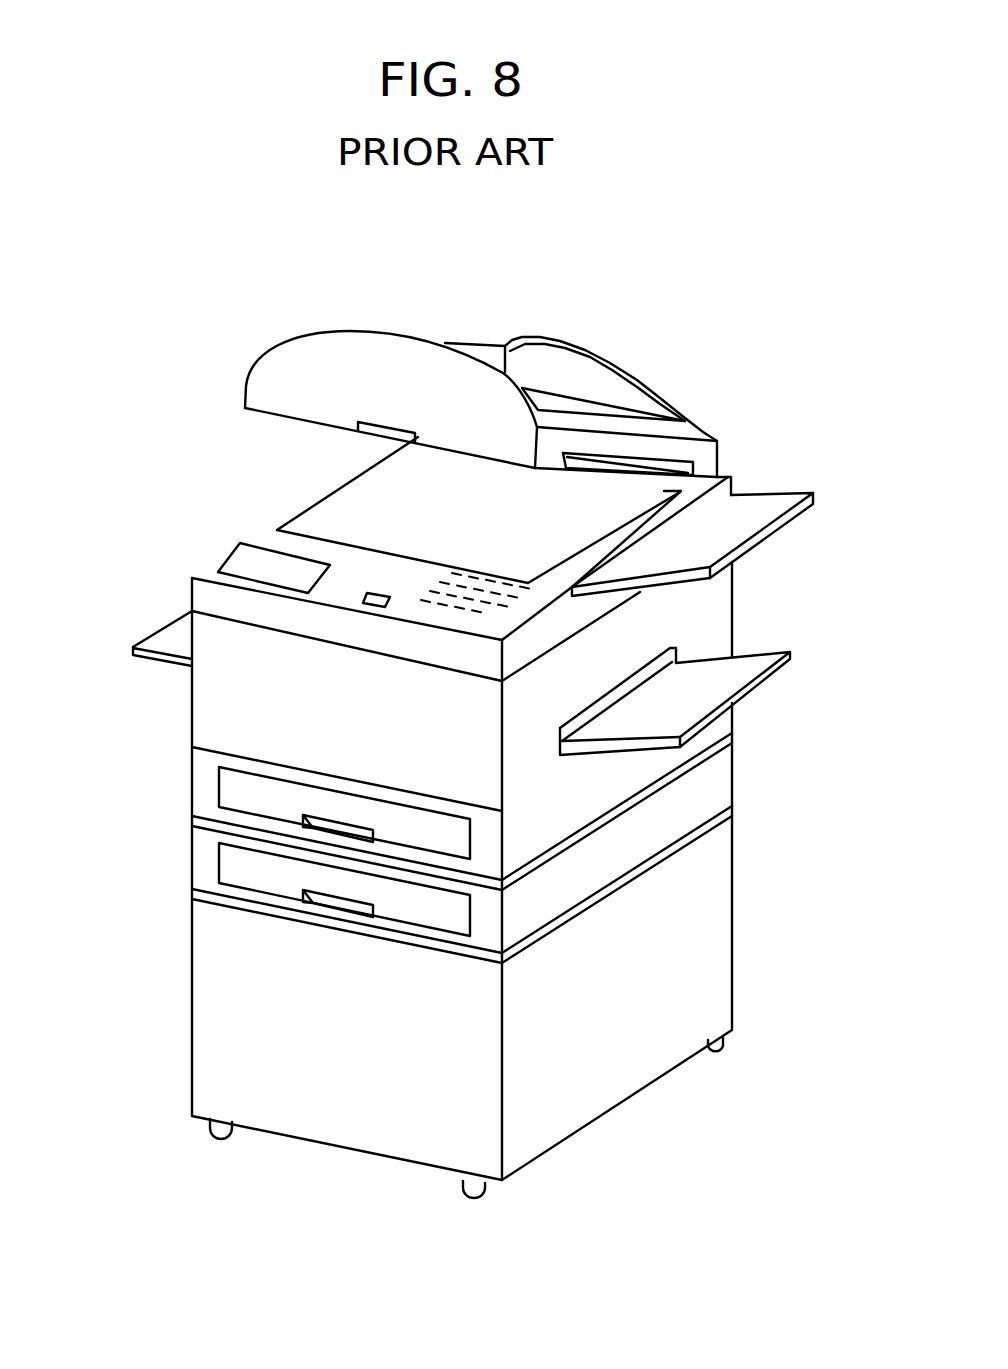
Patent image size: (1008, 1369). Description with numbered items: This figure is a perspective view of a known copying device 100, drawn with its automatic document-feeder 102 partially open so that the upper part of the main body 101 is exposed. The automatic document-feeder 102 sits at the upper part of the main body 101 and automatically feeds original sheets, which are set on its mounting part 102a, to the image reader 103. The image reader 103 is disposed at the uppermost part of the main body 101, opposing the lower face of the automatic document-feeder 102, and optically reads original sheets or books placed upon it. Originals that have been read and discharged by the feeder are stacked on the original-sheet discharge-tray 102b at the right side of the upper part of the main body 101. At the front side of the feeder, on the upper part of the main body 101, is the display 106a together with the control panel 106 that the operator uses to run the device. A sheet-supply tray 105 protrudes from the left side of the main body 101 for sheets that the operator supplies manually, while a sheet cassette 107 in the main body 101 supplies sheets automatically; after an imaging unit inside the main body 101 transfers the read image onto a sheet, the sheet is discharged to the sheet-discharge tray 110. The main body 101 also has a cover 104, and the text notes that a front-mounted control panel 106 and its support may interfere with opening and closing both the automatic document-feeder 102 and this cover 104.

The copying device 100 is at (551, 318).
The main body 101 is at (729, 462).
The automatic document-feeder 102 is at (299, 323).
The mounting part 102a is at (563, 407).
The original-sheet discharge-tray 102b is at (777, 505).
The image reader 103 is at (343, 503).
The cover 104 is at (203, 717).
The sheet-supply tray 105 is at (170, 630).
The control panel 106 is at (481, 614).
The display 106a is at (242, 563).
The sheet cassette 107 is at (228, 790).
The sheet-discharge tray 110 is at (762, 657).